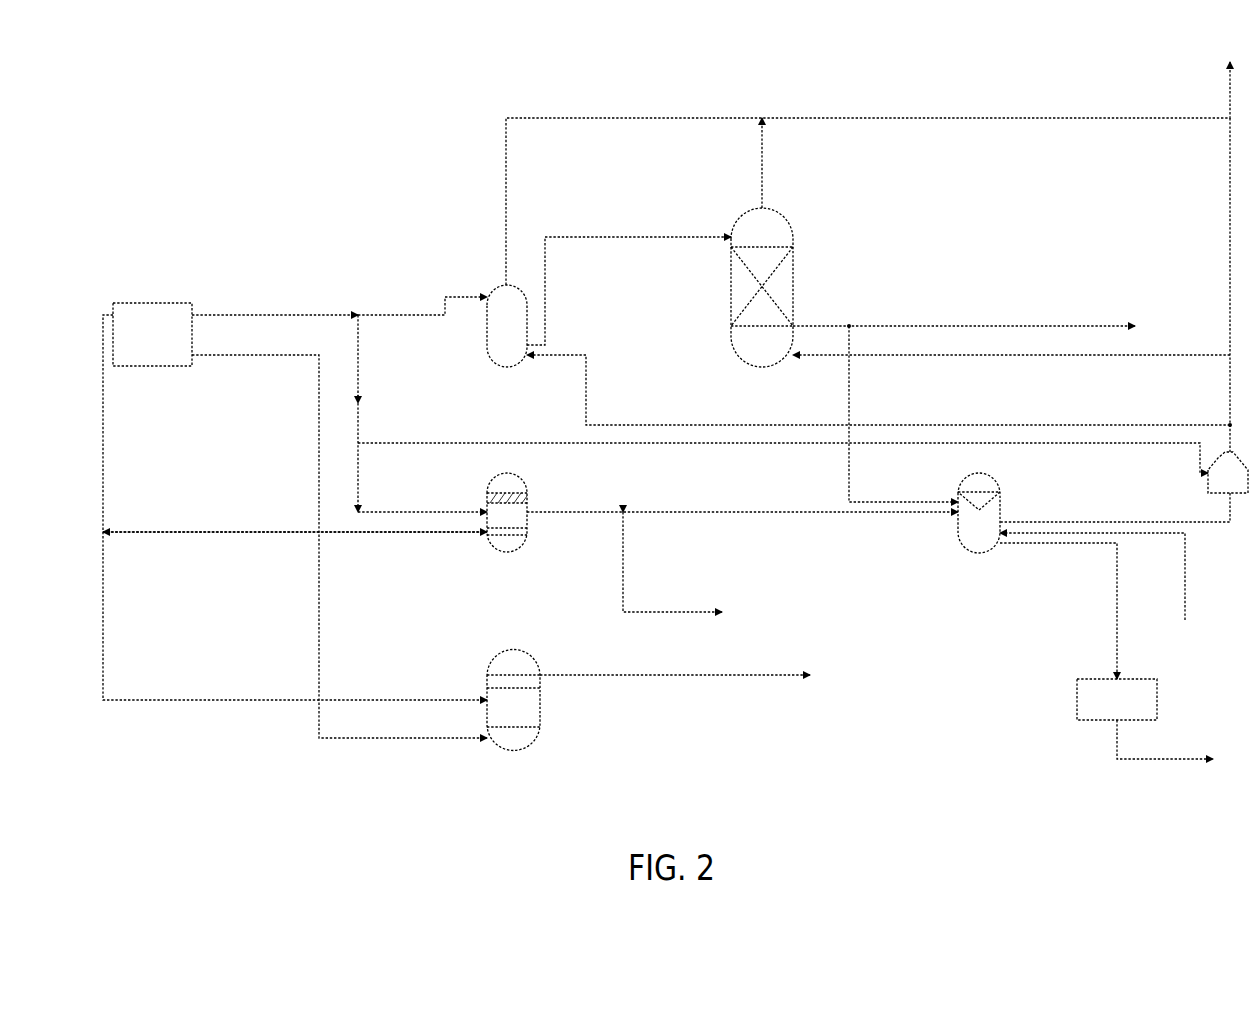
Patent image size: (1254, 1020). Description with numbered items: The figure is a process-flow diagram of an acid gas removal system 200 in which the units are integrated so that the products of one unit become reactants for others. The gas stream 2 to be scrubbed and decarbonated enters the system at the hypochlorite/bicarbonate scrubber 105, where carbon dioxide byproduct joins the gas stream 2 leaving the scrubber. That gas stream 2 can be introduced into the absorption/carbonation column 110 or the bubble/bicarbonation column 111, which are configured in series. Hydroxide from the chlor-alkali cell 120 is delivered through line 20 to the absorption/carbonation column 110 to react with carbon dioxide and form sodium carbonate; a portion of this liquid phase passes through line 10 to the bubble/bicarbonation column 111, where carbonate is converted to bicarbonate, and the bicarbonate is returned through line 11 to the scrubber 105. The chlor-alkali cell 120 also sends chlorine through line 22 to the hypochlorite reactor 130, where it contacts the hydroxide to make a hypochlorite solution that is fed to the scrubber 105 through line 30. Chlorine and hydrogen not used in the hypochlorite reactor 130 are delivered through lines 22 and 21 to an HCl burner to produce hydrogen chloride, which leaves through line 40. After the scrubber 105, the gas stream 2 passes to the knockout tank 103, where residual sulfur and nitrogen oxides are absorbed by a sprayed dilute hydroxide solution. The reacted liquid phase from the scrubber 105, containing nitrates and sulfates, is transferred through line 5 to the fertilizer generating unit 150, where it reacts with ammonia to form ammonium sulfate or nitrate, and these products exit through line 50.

The system 200 is at (250, 178).
The chlor-alkali cell 120 is at (171, 344).
The line 20 is at (320, 315).
The line 21 is at (265, 355).
The line 22 is at (103, 440).
The absorption/carbonation column 110 is at (525, 334).
The line 10 is at (640, 237).
The bubble/bicarbonation column 111 is at (780, 241).
The gas stream 2 is at (506, 207).
The line 11 is at (1028, 326).
The hypochlorite reactor 130 is at (525, 531).
The line 30 is at (590, 512).
The hypochlorite/bicarbonate scrubber 105 is at (997, 537).
The knockout tank 103 is at (1244, 490).
The line 5 is at (1117, 623).
The fertilizer generating unit 150 is at (1135, 710).
The line 50 is at (1198, 759).
The line 40 is at (745, 675).